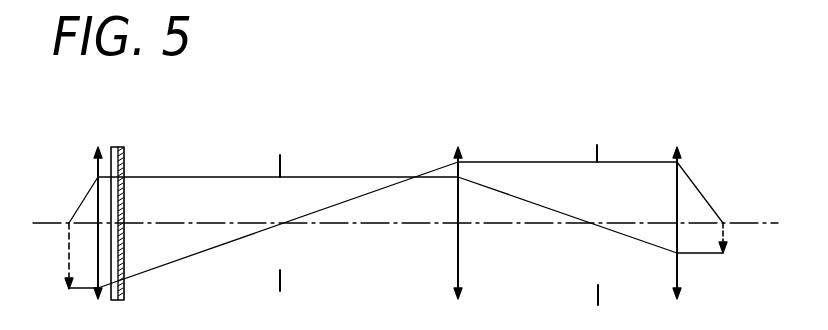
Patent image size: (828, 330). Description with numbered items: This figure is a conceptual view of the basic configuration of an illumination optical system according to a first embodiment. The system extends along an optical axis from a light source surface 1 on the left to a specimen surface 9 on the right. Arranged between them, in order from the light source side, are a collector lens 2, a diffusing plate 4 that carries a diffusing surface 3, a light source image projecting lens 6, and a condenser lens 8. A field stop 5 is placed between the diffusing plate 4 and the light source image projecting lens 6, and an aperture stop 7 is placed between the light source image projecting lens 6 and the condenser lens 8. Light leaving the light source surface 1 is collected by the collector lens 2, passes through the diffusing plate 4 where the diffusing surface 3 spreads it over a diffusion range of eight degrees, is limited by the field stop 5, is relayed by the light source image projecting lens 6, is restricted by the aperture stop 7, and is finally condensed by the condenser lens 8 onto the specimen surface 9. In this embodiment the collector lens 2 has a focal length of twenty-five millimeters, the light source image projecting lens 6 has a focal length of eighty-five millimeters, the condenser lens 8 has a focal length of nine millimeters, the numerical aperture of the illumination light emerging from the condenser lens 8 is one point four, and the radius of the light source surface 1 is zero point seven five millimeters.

The light source surface 1 is at (68, 252).
The collector lens 2 is at (96, 156).
The diffusing surface 3 is at (134, 152).
The diffusing plate 4 is at (117, 146).
The field stop 5 is at (279, 165).
The light source image projecting lens 6 is at (456, 158).
The aperture stop 7 is at (597, 150).
The condenser lens 8 is at (674, 155).
The specimen surface 9 is at (723, 220).